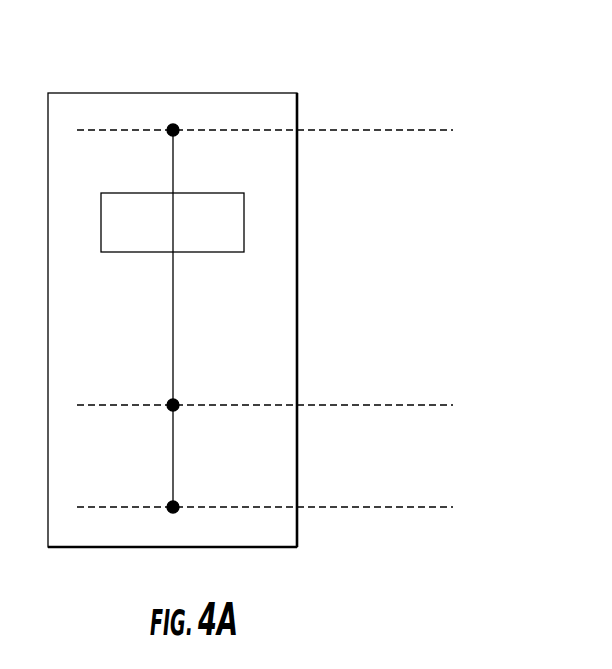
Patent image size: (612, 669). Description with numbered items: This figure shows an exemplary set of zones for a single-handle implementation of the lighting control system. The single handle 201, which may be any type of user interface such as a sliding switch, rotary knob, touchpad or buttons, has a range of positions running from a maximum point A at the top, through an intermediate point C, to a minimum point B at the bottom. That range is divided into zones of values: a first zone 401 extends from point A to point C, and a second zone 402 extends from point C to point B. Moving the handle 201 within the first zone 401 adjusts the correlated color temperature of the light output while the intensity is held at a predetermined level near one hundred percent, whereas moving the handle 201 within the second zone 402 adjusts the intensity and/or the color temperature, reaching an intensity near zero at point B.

The handle 201 is at (192, 93).
The first zone 401 is at (453, 130).
The second zone 402 is at (453, 405).